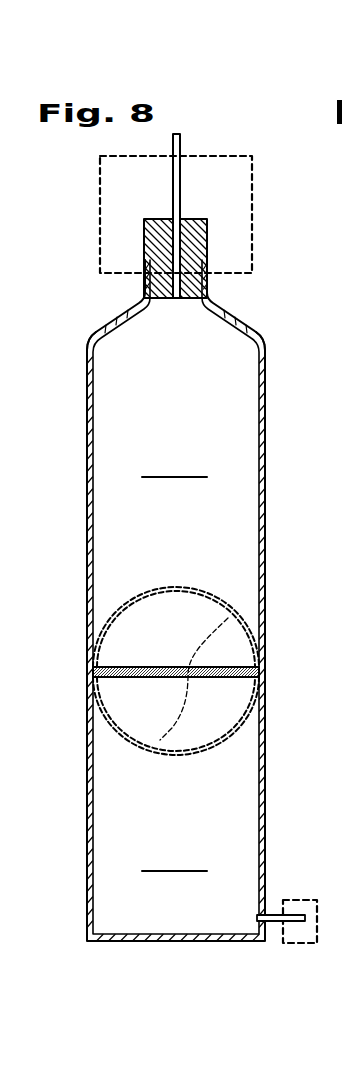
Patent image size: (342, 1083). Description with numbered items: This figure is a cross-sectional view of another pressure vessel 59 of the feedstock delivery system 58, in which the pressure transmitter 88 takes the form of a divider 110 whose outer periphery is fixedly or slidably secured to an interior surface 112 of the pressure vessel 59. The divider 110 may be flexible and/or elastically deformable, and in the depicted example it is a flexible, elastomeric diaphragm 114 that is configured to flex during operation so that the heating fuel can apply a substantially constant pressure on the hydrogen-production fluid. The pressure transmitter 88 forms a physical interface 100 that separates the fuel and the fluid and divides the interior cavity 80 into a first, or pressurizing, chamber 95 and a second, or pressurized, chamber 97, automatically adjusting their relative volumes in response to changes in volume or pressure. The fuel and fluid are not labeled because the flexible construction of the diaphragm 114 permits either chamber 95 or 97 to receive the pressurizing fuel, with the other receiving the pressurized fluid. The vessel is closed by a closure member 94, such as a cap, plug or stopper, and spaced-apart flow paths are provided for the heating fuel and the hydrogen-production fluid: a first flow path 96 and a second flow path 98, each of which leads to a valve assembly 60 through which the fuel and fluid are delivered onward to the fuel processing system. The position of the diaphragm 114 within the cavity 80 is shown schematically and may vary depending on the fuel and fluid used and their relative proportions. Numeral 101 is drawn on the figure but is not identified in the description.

The feedstock delivery system 58 is at (52, 316).
The pressure vessel 59 is at (88, 336).
The valve assembly 60 is at (97, 193).
The interior cavity 80 is at (238, 348).
The pressure transmitter 88 is at (225, 659).
The closure member 94 is at (157, 212).
The first chamber 95 is at (174, 464).
The first flow path 96 is at (273, 916).
The second chamber 97 is at (174, 858).
The second flow path 98 is at (182, 164).
The interface 100 is at (226, 683).
The right wall 101 is at (243, 537).
The divider 110 is at (152, 678).
The interior surface 112 is at (93, 489).
The elastomeric diaphragm 114 is at (126, 631).